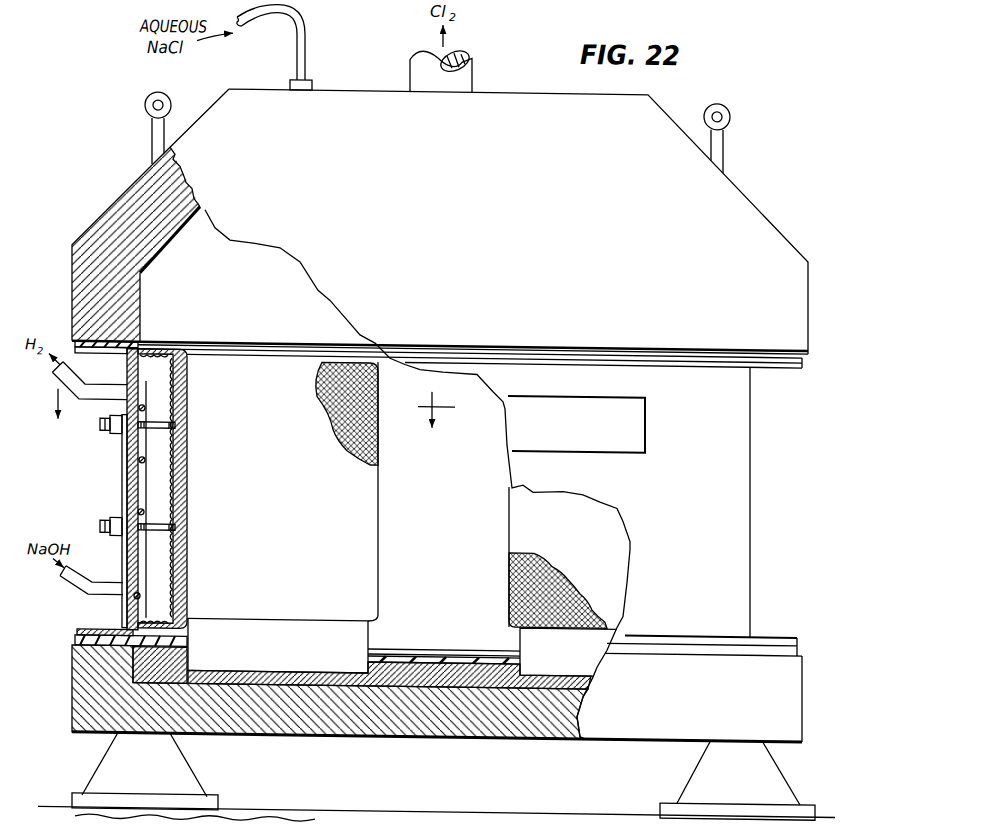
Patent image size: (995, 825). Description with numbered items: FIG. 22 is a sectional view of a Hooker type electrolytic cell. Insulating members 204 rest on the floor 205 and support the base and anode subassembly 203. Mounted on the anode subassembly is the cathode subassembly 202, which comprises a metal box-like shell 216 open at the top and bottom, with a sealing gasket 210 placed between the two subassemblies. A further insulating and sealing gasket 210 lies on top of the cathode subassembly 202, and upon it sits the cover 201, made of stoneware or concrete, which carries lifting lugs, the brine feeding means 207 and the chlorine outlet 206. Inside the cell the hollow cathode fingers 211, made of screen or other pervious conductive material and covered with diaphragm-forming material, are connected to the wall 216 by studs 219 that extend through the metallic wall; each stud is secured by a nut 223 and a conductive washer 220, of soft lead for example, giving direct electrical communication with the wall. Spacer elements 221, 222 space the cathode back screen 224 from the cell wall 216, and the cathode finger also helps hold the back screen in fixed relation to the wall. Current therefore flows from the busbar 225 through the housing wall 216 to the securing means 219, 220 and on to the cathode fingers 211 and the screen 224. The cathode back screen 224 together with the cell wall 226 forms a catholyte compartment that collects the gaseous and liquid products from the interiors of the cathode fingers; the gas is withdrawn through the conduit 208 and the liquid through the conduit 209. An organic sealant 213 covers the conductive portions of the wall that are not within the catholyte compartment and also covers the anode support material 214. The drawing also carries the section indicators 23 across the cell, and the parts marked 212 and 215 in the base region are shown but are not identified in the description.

The cover 201 is at (722, 199).
The cathode subassembly 202 is at (753, 480).
The base and anode subassembly 203 is at (520, 740).
The insulating members 204 is at (118, 757).
The floor 205 is at (531, 814).
The chlorine outlet 206 is at (474, 70).
The brine feeding means 207 is at (308, 60).
The conduit 208 is at (92, 390).
The conduit 209 is at (109, 587).
The sealing gasket 210 is at (135, 347).
The cathode finger 211 is at (379, 436).
The electrode support block 212 is at (277, 656).
The organic sealant 213 is at (478, 660).
The anode support material 214 is at (392, 676).
The concrete base layer 215 is at (326, 741).
The metal box-like shell 216 is at (97, 631).
The stud 219 is at (103, 427).
The conductive washer 220 is at (123, 447).
The spacer element 221 is at (162, 482).
The spacer element 222 is at (143, 412).
The nut 223 is at (110, 438).
The cathode back screen 224 is at (162, 616).
The busbar 225 is at (580, 431).
The cell wall 226 is at (312, 516).
The section line 23- 23 is at (63, 410).